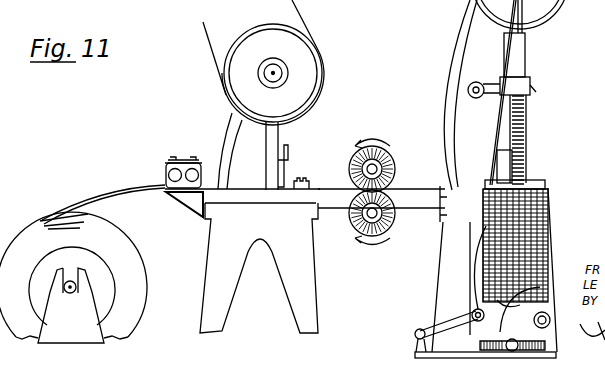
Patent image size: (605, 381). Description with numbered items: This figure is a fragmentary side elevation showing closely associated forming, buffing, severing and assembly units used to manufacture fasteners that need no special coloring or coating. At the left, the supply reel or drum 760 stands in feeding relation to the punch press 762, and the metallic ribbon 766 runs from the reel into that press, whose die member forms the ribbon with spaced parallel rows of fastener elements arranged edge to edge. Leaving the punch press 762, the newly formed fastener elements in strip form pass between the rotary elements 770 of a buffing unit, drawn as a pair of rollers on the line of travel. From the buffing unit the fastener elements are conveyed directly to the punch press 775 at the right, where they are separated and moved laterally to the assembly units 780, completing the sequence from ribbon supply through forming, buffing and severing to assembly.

The supply reel or drum 760 is at (73, 277).
The punch press 762 is at (242, 261).
The metallic ribbon 766 is at (139, 185).
The rotary elements 770 is at (386, 161).
The punch press 775 is at (505, 94).
The assembly units 780 is at (550, 221).